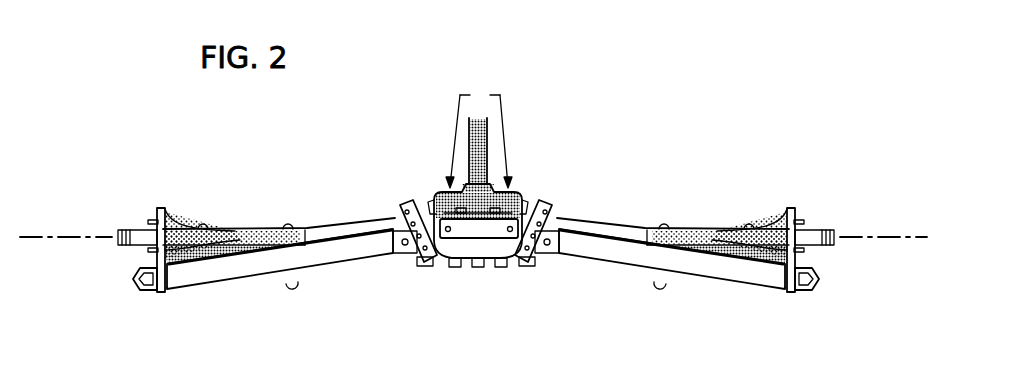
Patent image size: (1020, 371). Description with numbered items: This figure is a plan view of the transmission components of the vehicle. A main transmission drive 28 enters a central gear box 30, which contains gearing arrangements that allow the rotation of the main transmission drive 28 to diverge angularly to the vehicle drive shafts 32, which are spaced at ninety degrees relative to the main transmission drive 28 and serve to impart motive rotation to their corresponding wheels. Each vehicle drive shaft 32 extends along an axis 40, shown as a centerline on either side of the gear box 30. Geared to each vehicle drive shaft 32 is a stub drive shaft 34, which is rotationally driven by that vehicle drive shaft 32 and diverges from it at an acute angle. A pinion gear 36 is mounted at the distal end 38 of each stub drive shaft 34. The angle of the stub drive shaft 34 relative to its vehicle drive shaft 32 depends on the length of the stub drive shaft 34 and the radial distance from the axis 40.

The main transmission drive 28 is at (478, 143).
The gear box 30 is at (472, 236).
The vehicle drive shaft 32 is at (253, 232).
The stub drive shaft 34 is at (328, 260).
The pinion gear 36 is at (143, 290).
The distal end 38 is at (161, 293).
The axis 40 is at (55, 237).